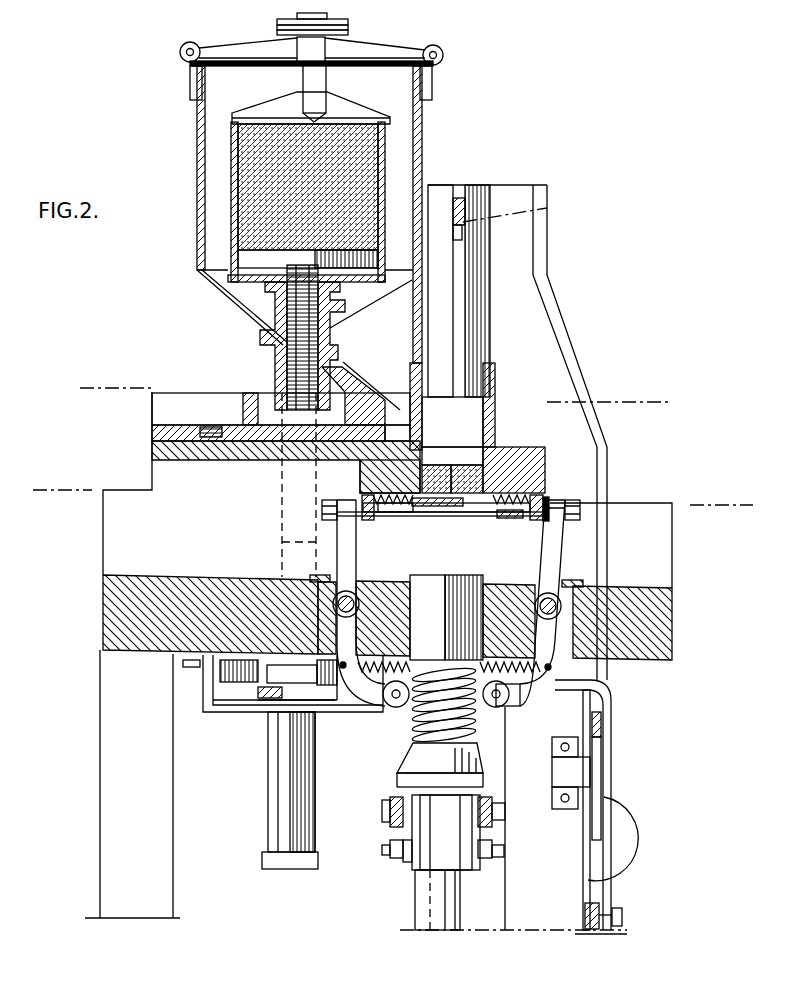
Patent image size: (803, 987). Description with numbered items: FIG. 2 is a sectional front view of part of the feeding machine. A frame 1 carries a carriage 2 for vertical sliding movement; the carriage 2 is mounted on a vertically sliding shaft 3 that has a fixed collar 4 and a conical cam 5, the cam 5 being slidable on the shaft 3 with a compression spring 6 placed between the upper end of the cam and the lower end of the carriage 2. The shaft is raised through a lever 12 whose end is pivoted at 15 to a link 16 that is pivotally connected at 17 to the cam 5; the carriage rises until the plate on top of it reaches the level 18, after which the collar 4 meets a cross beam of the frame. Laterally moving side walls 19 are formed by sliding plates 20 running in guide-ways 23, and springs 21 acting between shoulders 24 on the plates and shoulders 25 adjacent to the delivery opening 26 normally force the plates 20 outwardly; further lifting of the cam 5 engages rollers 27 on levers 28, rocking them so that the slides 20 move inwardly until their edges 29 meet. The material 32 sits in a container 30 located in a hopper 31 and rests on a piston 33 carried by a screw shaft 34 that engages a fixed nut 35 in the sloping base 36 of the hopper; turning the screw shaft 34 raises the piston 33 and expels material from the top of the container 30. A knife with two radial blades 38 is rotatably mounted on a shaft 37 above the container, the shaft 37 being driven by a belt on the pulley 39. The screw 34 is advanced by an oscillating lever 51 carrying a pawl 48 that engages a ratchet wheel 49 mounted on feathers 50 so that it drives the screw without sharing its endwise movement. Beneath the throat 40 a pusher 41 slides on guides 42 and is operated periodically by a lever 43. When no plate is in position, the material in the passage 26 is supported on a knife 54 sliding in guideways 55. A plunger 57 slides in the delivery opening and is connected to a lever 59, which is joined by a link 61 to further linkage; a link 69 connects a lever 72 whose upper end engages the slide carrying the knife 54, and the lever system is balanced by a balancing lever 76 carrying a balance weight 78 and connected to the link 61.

The frame 1 is at (658, 618).
The carriage 2 is at (430, 586).
The vertically sliding shaft 3 is at (432, 897).
The fixed collar 4 is at (393, 498).
The conical cam 5 is at (457, 768).
The compression spring 6 is at (418, 730).
The lever 12 is at (392, 794).
The pivot 15 is at (386, 810).
The link 16 is at (393, 843).
The pivot 17 is at (400, 853).
The level 18 is at (466, 512).
The side walls 19 is at (430, 505).
The sliding plates 20 is at (392, 513).
The springs 21 is at (358, 486).
The guide-ways 23 is at (487, 516).
The shoulders 24 is at (545, 500).
The shoulders 25 is at (495, 451).
The delivery opening 26 is at (492, 420).
The rollers 27 is at (393, 706).
The levers 28 is at (345, 531).
The edges 29 is at (453, 458).
The container 30 is at (232, 150).
The hopper 31 is at (197, 198).
The material 32 is at (362, 156).
The piston 33 is at (245, 258).
The screw shaft 34 is at (283, 350).
The fixed nut 35 is at (333, 320).
The sloping base 36 is at (238, 303).
The shaft 37 is at (326, 88).
The radial blades 38 is at (272, 110).
The pulley 39 is at (348, 24).
The throat 40 is at (395, 418).
The pusher 41 is at (175, 430).
The guides 42 is at (250, 400).
The lever 43 is at (212, 426).
The pawl 48 is at (253, 680).
The ratchet wheel 49 is at (220, 670).
The feathers 50 is at (265, 834).
The oscillating lever 51 is at (267, 698).
The knife 54 is at (440, 505).
The guideways 55 is at (365, 481).
The plunger 57 is at (467, 293).
The lever 59 is at (497, 200).
The link 61 is at (563, 340).
The link 69 is at (585, 914).
The lever 72 is at (611, 748).
The balancing lever 76 is at (592, 818).
The balance weight 78 is at (623, 846).